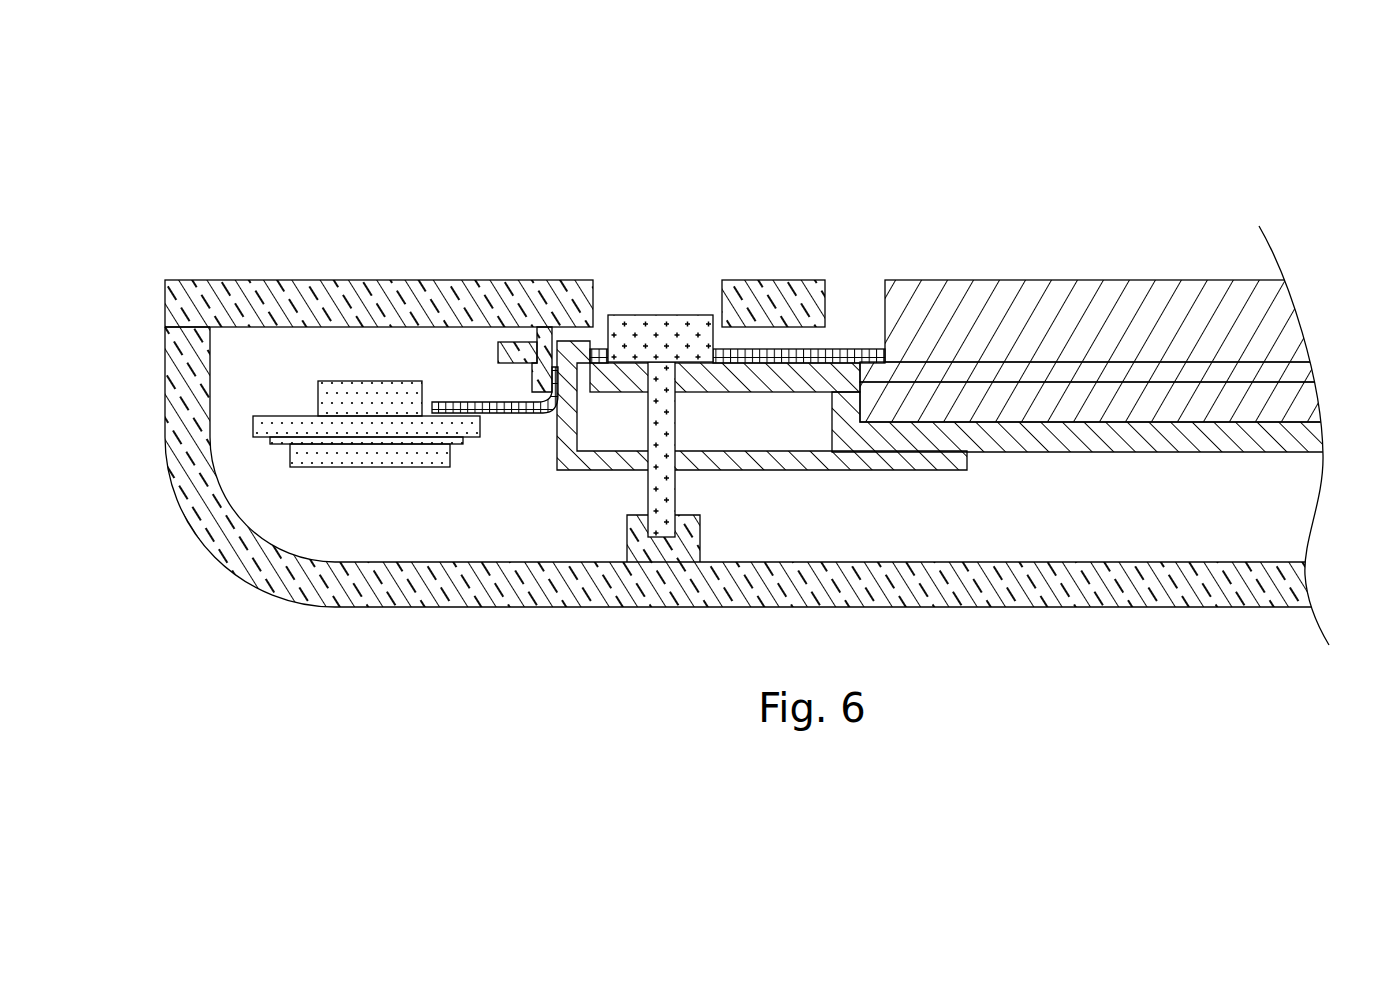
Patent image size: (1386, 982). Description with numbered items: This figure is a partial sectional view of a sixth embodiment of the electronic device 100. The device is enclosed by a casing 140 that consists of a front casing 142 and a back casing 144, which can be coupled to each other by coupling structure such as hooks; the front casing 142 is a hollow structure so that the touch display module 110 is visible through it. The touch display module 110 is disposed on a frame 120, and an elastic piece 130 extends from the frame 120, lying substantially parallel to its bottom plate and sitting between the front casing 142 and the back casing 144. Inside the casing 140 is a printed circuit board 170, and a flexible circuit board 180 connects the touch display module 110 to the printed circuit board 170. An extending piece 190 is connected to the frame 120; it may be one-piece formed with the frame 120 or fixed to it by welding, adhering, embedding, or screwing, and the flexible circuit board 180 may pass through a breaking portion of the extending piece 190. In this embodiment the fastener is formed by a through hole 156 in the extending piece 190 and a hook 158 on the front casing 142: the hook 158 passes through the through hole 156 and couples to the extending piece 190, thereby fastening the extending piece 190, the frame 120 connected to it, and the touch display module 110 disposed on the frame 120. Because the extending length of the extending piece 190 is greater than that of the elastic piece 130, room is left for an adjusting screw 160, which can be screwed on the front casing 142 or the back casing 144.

The electronic device 100 is at (98, 154).
The touch display module 110 is at (1002, 272).
The frame 120 is at (1259, 452).
The elastic piece 130 is at (788, 378).
The casing 140 is at (92, 282).
The front casing 142 is at (173, 296).
The back casing 144 is at (173, 349).
The through hole 156 is at (522, 340).
The hook 158 is at (547, 335).
The adjusting screw 160 is at (652, 332).
The printed circuit board 170 is at (287, 438).
The flexible circuit board 180 is at (465, 400).
The extending piece 190 is at (575, 462).